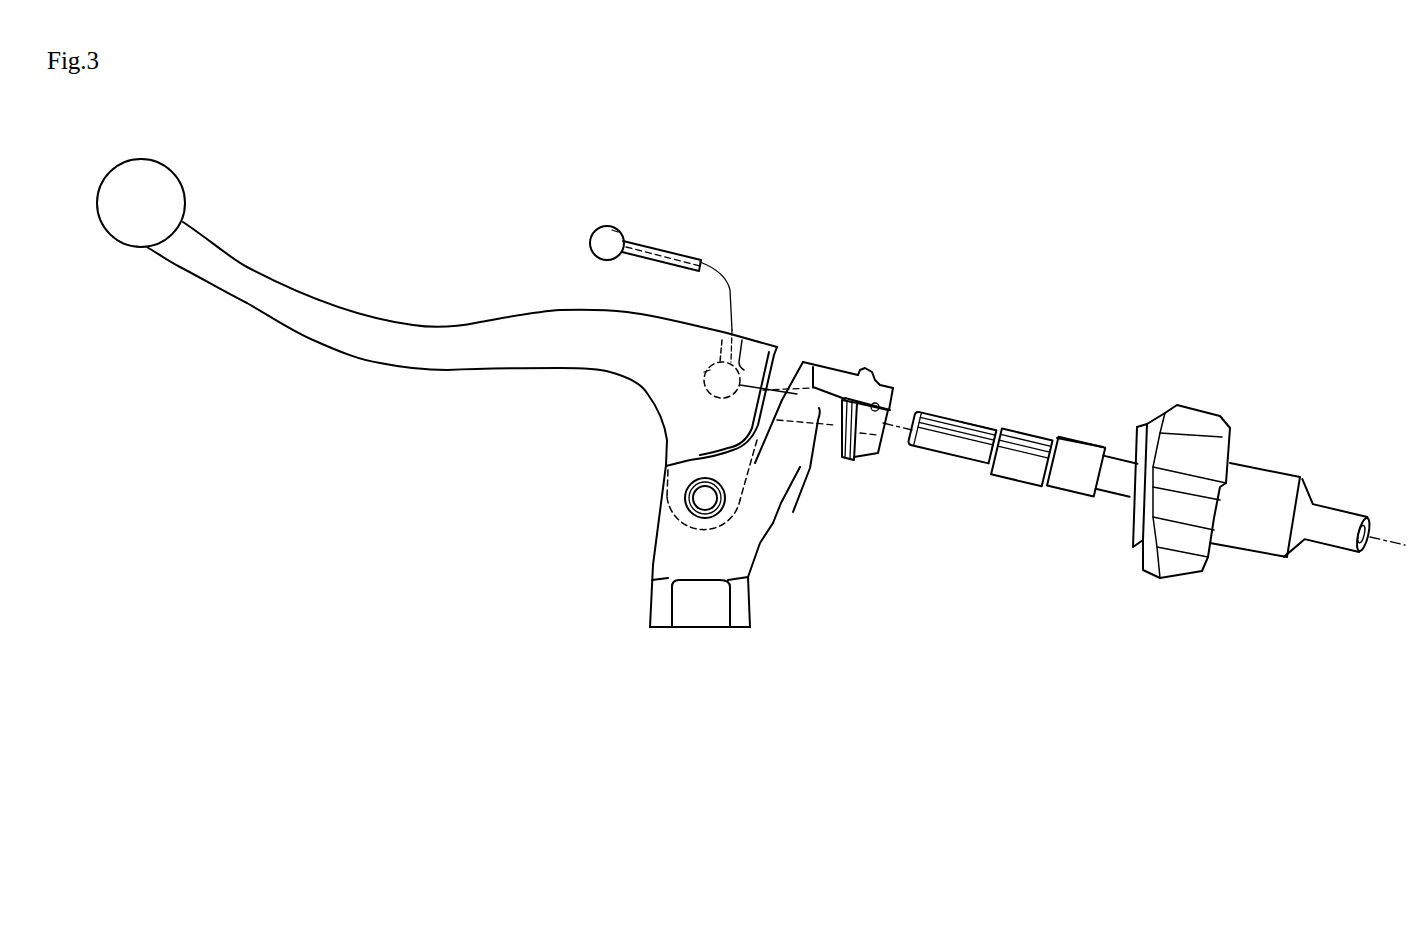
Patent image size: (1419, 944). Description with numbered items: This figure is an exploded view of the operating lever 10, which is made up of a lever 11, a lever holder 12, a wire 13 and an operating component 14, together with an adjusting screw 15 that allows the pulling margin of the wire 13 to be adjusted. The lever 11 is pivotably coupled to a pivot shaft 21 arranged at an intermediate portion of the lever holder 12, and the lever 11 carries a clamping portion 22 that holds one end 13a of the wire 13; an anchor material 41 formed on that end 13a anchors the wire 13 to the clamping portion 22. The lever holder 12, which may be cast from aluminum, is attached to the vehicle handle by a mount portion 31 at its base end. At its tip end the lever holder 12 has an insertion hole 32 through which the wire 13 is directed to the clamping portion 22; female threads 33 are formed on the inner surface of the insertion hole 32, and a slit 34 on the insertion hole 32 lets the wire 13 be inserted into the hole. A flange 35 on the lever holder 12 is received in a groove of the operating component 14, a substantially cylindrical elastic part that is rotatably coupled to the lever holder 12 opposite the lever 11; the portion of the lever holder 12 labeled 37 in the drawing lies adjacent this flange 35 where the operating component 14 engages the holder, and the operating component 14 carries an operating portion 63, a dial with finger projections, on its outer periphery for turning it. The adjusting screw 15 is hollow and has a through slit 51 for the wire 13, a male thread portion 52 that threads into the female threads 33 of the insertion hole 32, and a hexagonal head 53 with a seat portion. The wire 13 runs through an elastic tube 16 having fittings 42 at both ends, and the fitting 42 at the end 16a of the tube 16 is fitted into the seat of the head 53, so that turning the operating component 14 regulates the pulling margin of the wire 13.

The operating lever 10 is at (851, 201).
The lever 11 is at (362, 312).
The lever holder 12 is at (673, 547).
The wire 13 is at (657, 250).
The end of the wire 13a is at (613, 227).
The operating component 14 is at (1252, 465).
The adjusting screw 15 is at (975, 455).
The tube 16 is at (1110, 500).
The end of the tube 16a is at (1085, 440).
The pivot shaft 21 is at (698, 499).
The clamping portion 22 is at (704, 388).
The mount portion 31 is at (647, 627).
The insertion hole 32 is at (867, 425).
The female threads 33 is at (876, 395).
The slit 34 is at (833, 372).
The flange 35 is at (843, 462).
The cylindrical portion 37 is at (870, 460).
The anchor material 41 is at (600, 228).
The fitting 42 is at (1065, 492).
The through slit 51 is at (980, 451).
The male thread portion 52 is at (952, 482).
The head 53 is at (1013, 482).
The operating portion 63 is at (1182, 407).